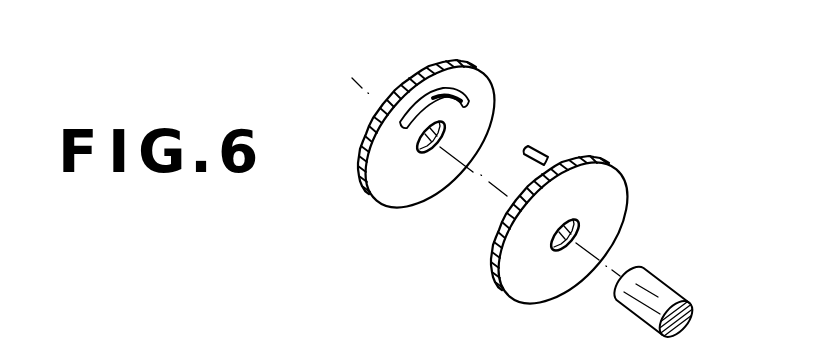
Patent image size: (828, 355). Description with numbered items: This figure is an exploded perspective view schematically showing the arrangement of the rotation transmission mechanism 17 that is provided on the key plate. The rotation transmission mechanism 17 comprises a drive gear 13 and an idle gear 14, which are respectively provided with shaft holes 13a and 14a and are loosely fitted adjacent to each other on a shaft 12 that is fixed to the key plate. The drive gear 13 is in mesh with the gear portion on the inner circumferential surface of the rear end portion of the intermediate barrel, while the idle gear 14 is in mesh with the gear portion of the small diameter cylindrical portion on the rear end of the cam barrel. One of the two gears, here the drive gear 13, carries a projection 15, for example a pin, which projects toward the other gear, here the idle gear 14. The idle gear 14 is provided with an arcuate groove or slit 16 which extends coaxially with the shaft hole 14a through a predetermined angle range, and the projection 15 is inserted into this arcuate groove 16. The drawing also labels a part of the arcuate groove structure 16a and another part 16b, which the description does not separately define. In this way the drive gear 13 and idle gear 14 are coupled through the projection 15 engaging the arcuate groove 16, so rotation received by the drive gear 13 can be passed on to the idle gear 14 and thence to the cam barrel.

The shaft 12 is at (667, 292).
The drive gear 13 is at (548, 288).
The shaft hole 13a is at (582, 236).
The idle gear 14 is at (440, 181).
The shaft hole 14a is at (419, 154).
The projection 15 is at (529, 146).
The arcuate groove 16 is at (422, 96).
The peripheral rim 16a is at (370, 129).
The cam slot 16b is at (473, 104).
The rotation transmission mechanism 17 is at (672, 104).